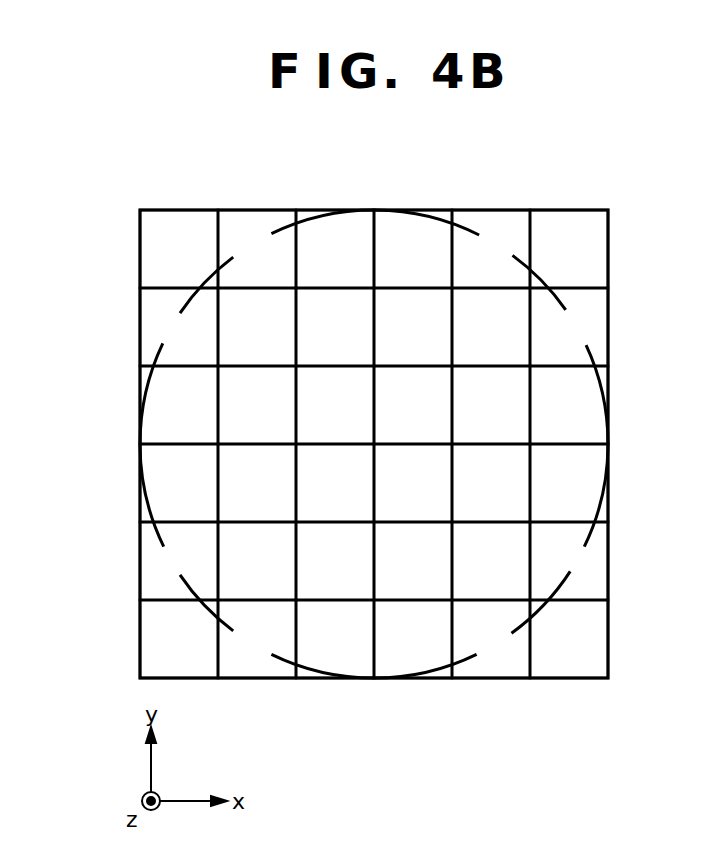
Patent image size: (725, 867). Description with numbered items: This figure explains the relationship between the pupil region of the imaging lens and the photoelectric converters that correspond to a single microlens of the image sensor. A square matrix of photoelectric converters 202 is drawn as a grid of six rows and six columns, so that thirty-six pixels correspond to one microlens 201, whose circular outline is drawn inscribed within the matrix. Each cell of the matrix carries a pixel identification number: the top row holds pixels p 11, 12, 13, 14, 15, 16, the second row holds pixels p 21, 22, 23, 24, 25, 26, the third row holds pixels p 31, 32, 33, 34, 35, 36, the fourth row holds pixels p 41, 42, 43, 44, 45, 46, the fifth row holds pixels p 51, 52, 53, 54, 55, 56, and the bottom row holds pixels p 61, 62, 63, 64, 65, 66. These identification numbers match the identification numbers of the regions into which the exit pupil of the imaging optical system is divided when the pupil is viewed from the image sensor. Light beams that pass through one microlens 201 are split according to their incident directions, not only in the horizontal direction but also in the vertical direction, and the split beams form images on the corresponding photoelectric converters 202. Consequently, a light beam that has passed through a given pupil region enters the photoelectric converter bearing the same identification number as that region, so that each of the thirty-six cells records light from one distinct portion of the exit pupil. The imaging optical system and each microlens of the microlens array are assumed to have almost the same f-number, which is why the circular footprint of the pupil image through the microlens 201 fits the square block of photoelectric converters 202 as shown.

The microlens 201 is at (282, 224).
The photoelectric converters 202 is at (418, 444).
The pixel p11 11 is at (179, 249).
The pixel p12 12 is at (257, 249).
The pixel p13 13 is at (335, 249).
The pixel p14 14 is at (413, 249).
The pixel p15 15 is at (491, 249).
The pixel p16 16 is at (569, 249).
The pixel p21 21 is at (179, 327).
The pixel p22 22 is at (257, 327).
The pixel p23 23 is at (335, 327).
The pixel p24 24 is at (413, 327).
The pixel p25 25 is at (491, 327).
The pixel p26 26 is at (569, 327).
The pixel p31 31 is at (179, 405).
The pixel p32 32 is at (257, 405).
The pixel p33 33 is at (335, 405).
The pixel p34 34 is at (413, 405).
The pixel p35 35 is at (491, 405).
The pixel p36 36 is at (569, 405).
The pixel p41 41 is at (179, 483).
The pixel p42 42 is at (257, 483).
The pixel p43 43 is at (335, 483).
The pixel p44 44 is at (413, 483).
The pixel p45 45 is at (491, 483).
The pixel p46 46 is at (569, 483).
The pixel p51 51 is at (179, 561).
The pixel p52 52 is at (257, 561).
The pixel p53 53 is at (335, 561).
The pixel p54 54 is at (413, 561).
The pixel p55 55 is at (491, 561).
The pixel p56 56 is at (569, 561).
The pixel p61 61 is at (179, 639).
The pixel p62 62 is at (257, 639).
The pixel p63 63 is at (335, 639).
The pixel p64 64 is at (413, 639).
The pixel p65 65 is at (491, 639).
The pixel p66 66 is at (569, 639).